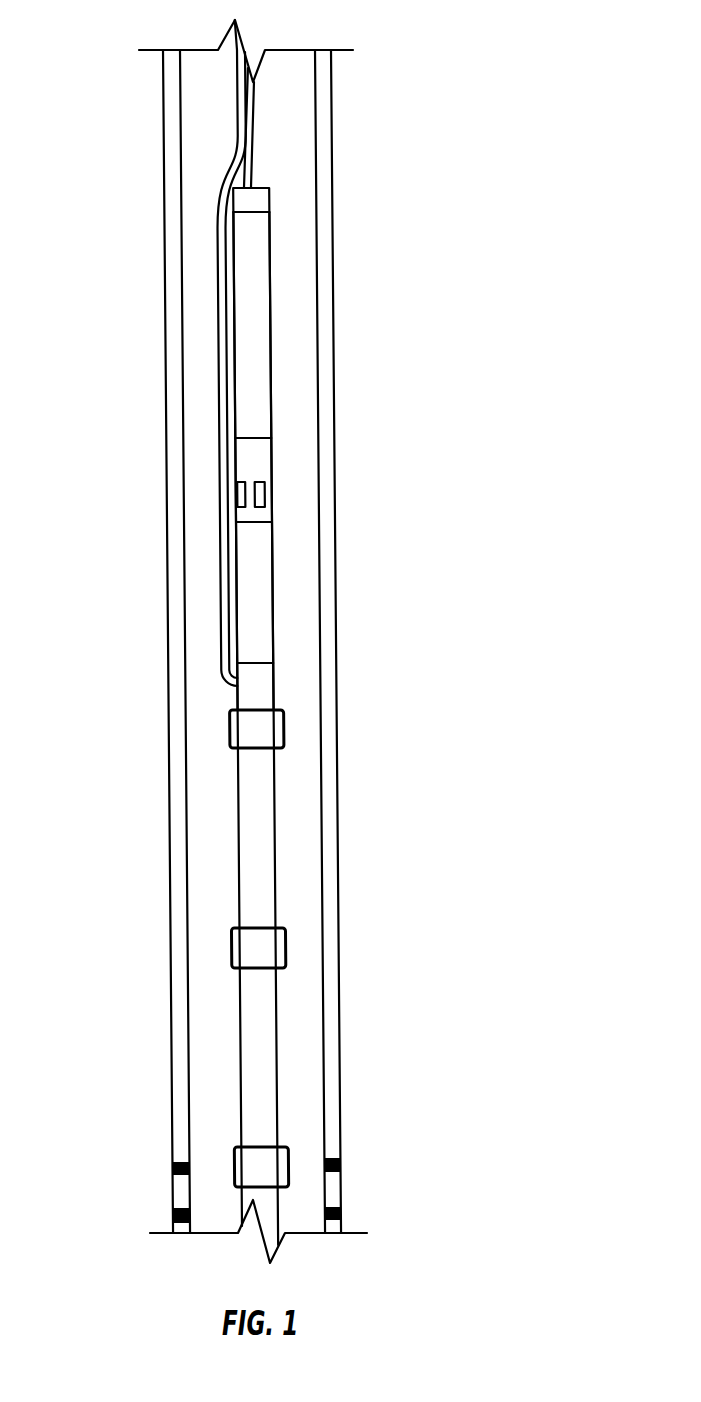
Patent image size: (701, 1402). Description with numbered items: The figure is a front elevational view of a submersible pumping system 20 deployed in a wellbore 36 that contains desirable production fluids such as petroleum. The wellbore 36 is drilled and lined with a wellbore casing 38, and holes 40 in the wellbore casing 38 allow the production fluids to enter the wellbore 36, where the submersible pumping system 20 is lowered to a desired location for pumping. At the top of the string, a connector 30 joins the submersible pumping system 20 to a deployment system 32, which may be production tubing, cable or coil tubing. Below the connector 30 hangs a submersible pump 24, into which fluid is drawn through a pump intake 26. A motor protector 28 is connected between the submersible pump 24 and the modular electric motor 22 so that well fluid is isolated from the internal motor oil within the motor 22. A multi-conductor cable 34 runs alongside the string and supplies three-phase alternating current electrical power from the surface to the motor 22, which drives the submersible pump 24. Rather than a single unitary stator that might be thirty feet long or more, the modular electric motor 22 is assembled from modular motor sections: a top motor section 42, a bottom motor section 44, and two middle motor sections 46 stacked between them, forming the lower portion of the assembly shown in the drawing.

The submersible pumping system 20 is at (412, 126).
The modular electric motor 22 is at (280, 814).
The submersible pump 24 is at (314, 325).
The pump intake 26 is at (315, 470).
The motor protector 28 is at (317, 592).
The connector 30 is at (313, 184).
The deployment system 32 is at (318, 128).
The multi-conductor cable 34 is at (217, 283).
The wellbore 36 is at (205, 498).
The wellbore casing 38 is at (244, 641).
The holes 40 is at (227, 1181).
The top motor section 42 is at (317, 676).
The bottom motor section 44 is at (318, 1155).
The middle motor sections 46 is at (316, 885).